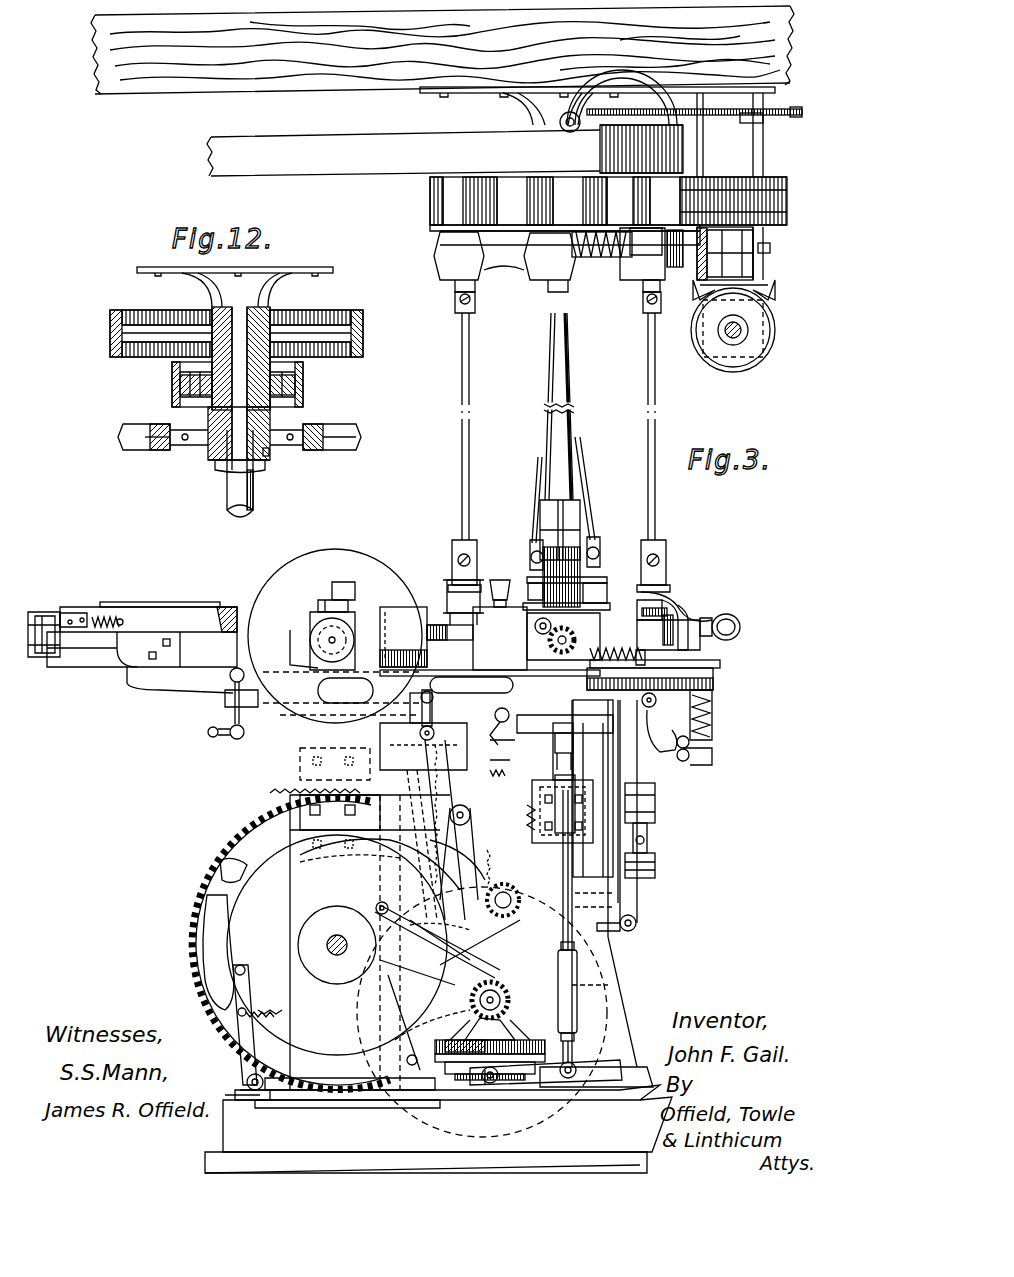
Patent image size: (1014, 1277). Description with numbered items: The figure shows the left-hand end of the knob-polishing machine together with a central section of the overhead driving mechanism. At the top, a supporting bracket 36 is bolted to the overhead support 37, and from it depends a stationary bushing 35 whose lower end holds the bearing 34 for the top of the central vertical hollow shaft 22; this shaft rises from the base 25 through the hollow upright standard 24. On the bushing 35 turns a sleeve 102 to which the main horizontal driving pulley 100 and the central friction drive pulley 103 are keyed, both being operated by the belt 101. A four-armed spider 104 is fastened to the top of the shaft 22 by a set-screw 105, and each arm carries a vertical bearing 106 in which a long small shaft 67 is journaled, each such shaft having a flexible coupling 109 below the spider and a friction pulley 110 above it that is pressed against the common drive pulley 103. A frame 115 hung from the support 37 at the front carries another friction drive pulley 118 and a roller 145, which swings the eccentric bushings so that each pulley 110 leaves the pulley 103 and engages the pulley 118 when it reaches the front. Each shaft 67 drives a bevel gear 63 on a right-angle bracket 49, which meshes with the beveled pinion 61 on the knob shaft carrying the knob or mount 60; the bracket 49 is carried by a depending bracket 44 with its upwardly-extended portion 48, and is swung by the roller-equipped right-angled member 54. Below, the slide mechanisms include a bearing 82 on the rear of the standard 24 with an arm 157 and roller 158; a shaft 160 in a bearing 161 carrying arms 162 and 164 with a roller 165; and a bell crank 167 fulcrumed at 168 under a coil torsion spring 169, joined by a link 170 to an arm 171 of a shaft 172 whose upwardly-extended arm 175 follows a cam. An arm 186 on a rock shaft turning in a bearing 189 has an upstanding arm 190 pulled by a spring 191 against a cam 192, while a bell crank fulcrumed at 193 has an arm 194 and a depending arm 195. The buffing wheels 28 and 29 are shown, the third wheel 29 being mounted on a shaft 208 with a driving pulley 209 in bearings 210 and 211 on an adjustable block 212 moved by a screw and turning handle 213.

In FIG. 12, the central vertical hollow shaft 22 is at (250, 496).
In FIG. 3, the hollow upright standard 24 is at (623, 960).
In FIG. 3, the base 25 is at (438, 1129).
In FIG. 3, the buffing wheel 28 is at (370, 535).
In FIG. 3, the buffing wheel 29 is at (620, 520).
In FIG. 12, the bearing 34 is at (270, 418).
In FIG. 12, the stationary bushing 35 is at (305, 375).
In FIG. 12, the supporting bracket 36 is at (282, 292).
In FIG. 3, the supporting bracket 36 is at (508, 105).
In FIG. 3, the overhead support 37 is at (442, 50).
In FIG. 3, the depending bracket 44 is at (665, 725).
In FIG. 3, the upwardly-extended portion of bracket 48 is at (712, 745).
In FIG. 3, the right-angle bracket 49 is at (695, 595).
In FIG. 3, the right-angled member 54 is at (535, 755).
In FIG. 3, the knob or mount 60 is at (738, 624).
In FIG. 3, the beveled pinion 61 is at (670, 635).
In FIG. 3, the bevel gear 63 is at (648, 617).
In FIG. 3, the long small shaft 67 is at (460, 463).
In FIG. 3, the bearing 82 is at (560, 875).
In FIG. 12, the main horizontal driving pulley 100 is at (363, 326).
In FIG. 3, the main horizontal driving pulley 100 is at (447, 122).
In FIG. 3, the belt 101 is at (330, 140).
In FIG. 12, the sleeve or bushing 102 is at (275, 315).
In FIG. 12, the central friction drive pulley 103 is at (172, 385).
In FIG. 3, the central friction drive pulley 103 is at (440, 226).
In FIG. 12, the spider 104 is at (205, 445).
In FIG. 3, the spider 104 is at (590, 270).
In FIG. 12, the set-screw 105 is at (270, 452).
In FIG. 12, the vertical bearing 106 is at (352, 426).
In FIG. 3, the vertical bearing 106 is at (440, 262).
In FIG. 3, the flexible coupling 109 is at (476, 300).
In FIG. 3, the friction pulley 110 is at (440, 200).
In FIG. 3, the frame 115 is at (692, 290).
In FIG. 3, the friction drive pulley 118 is at (795, 173).
In FIG. 3, the roller 145 is at (645, 300).
In FIG. 3, the arm 157 is at (482, 885).
In FIG. 3, the roller 158 is at (380, 822).
In FIG. 3, the shaft 160 is at (476, 812).
In FIG. 3, the bearing 161 is at (531, 753).
In FIG. 3, the arm 162 is at (548, 751).
In FIG. 3, the arm 164 is at (485, 845).
In FIG. 3, the roller 165 is at (412, 908).
In FIG. 3, the bell crank 167 is at (585, 770).
In FIG. 3, the fulcrum 168 is at (600, 815).
In FIG. 3, the coil torsion spring 169 is at (545, 840).
In FIG. 3, the link 170 is at (640, 935).
In FIG. 3, the arm 171 is at (540, 1085).
In FIG. 3, the shaft 172 is at (505, 1080).
In FIG. 3, the upwardly-extended arm 175 is at (435, 975).
In FIG. 3, the arm 186 is at (352, 1085).
In FIG. 3, the bearing 189 is at (250, 1108).
In FIG. 3, the upstanding arm 190 is at (265, 1040).
In FIG. 3, the spring 191 is at (260, 1025).
In FIG. 3, the cam 192 is at (240, 928).
In FIG. 3, the fulcrum 193 is at (365, 745).
In FIG. 3, the arm 194 is at (460, 722).
In FIG. 3, the depending arm 195 is at (440, 805).
In FIG. 3, the shaft 208 is at (455, 580).
In FIG. 3, the driving pulley 209 is at (447, 628).
In FIG. 3, the bearing 210 is at (325, 612).
In FIG. 3, the bearing 211 is at (495, 582).
In FIG. 3, the adjustable block 212 is at (345, 690).
In FIG. 3, the screw and turning handle 213 is at (490, 688).